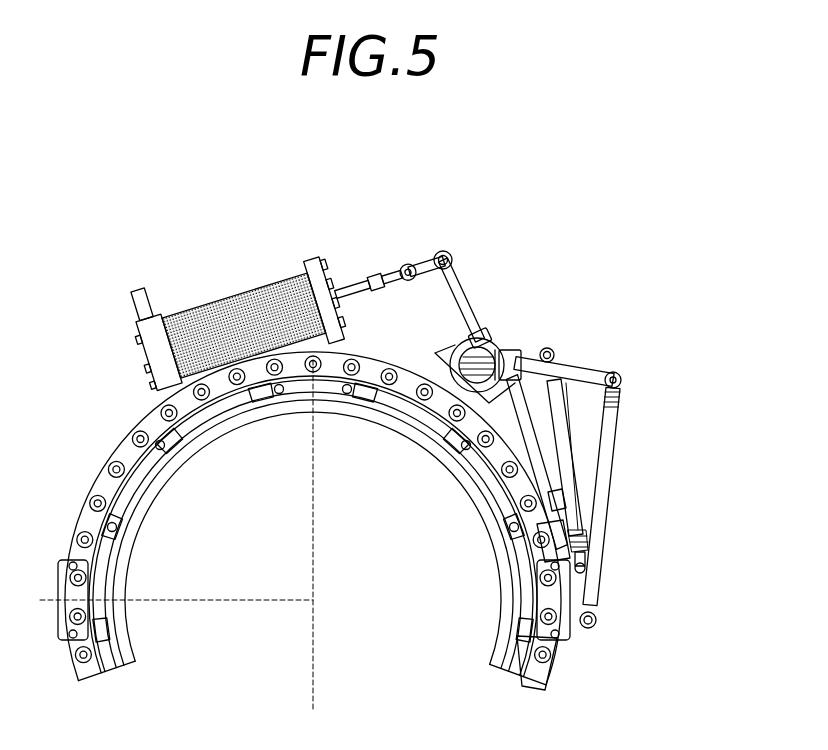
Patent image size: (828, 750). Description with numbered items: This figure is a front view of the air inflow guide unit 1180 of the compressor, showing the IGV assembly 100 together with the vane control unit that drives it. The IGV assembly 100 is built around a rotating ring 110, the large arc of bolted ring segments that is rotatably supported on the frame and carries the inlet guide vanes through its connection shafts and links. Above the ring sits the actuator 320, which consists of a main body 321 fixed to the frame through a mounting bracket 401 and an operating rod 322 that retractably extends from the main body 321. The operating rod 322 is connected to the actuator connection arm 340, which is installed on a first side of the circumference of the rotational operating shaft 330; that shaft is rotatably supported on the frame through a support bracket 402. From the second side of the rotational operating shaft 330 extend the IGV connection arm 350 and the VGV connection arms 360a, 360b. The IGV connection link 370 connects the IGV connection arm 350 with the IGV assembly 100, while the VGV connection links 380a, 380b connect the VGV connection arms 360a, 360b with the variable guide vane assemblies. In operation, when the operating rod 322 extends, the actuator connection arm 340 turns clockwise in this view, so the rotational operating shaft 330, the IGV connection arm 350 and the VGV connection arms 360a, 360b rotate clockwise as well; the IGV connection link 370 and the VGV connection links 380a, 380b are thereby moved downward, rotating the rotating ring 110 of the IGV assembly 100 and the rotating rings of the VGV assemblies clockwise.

The air inflow guide unit 1180 is at (514, 142).
The IGV assembly 100 is at (570, 658).
The rotating ring 110 is at (539, 525).
The actuator 320 is at (248, 272).
The main body 321 is at (200, 312).
The operating rod 322 is at (363, 277).
The rotational operating shaft 330 is at (497, 347).
The actuator connection arm 340 is at (463, 292).
The IGV connection arm 350 is at (587, 373).
The VGV connection arm 360a is at (527, 353).
The VGV connection arm 360b is at (489, 342).
The IGV connection link 370 is at (612, 483).
The VGV connection link 380a is at (561, 430).
The VGV connection link 380b is at (538, 402).
The mounting bracket 401 is at (332, 277).
The support bracket 402 is at (442, 357).